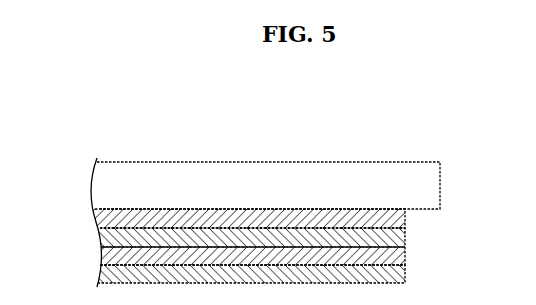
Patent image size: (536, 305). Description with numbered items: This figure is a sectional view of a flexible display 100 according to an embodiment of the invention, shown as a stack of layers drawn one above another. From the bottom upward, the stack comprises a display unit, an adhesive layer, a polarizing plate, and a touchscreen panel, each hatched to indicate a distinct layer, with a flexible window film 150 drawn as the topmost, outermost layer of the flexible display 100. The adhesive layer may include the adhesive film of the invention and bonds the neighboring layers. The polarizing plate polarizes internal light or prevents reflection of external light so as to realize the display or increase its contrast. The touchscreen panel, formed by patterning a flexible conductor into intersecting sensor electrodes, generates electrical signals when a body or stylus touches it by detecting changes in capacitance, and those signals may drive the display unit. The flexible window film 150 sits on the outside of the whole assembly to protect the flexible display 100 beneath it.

The flexible display 100 is at (412, 144).
The flexible window film 150 is at (432, 186).